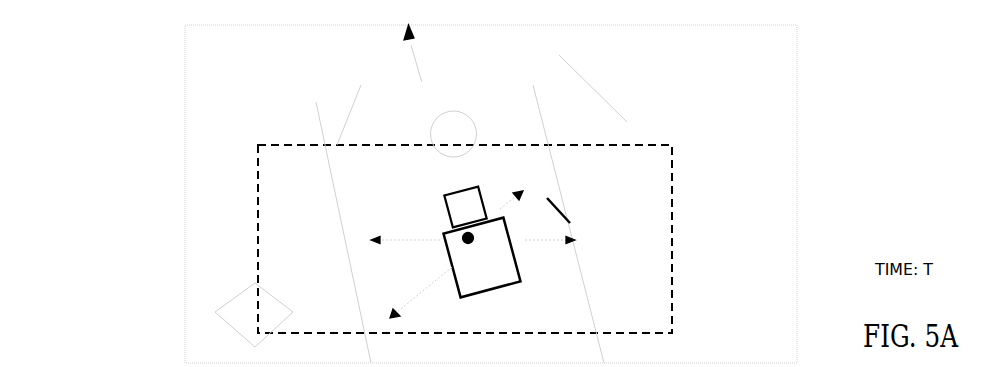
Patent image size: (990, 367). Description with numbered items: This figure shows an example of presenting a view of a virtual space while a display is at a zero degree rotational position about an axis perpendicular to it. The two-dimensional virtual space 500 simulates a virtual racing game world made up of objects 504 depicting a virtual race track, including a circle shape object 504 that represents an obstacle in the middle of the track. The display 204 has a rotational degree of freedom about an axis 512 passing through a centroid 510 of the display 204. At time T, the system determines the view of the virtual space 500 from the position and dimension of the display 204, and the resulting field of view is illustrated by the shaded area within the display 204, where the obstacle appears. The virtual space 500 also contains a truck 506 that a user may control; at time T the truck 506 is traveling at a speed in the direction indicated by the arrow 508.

The two-dimensional virtual space 500 is at (797, 27).
The display 204 is at (673, 152).
The objects 504 is at (316, 112).
The arrow 508 is at (415, 61).
The truck 506 is at (507, 250).
The centroid 510 is at (465, 237).
The axis 512 is at (452, 267).